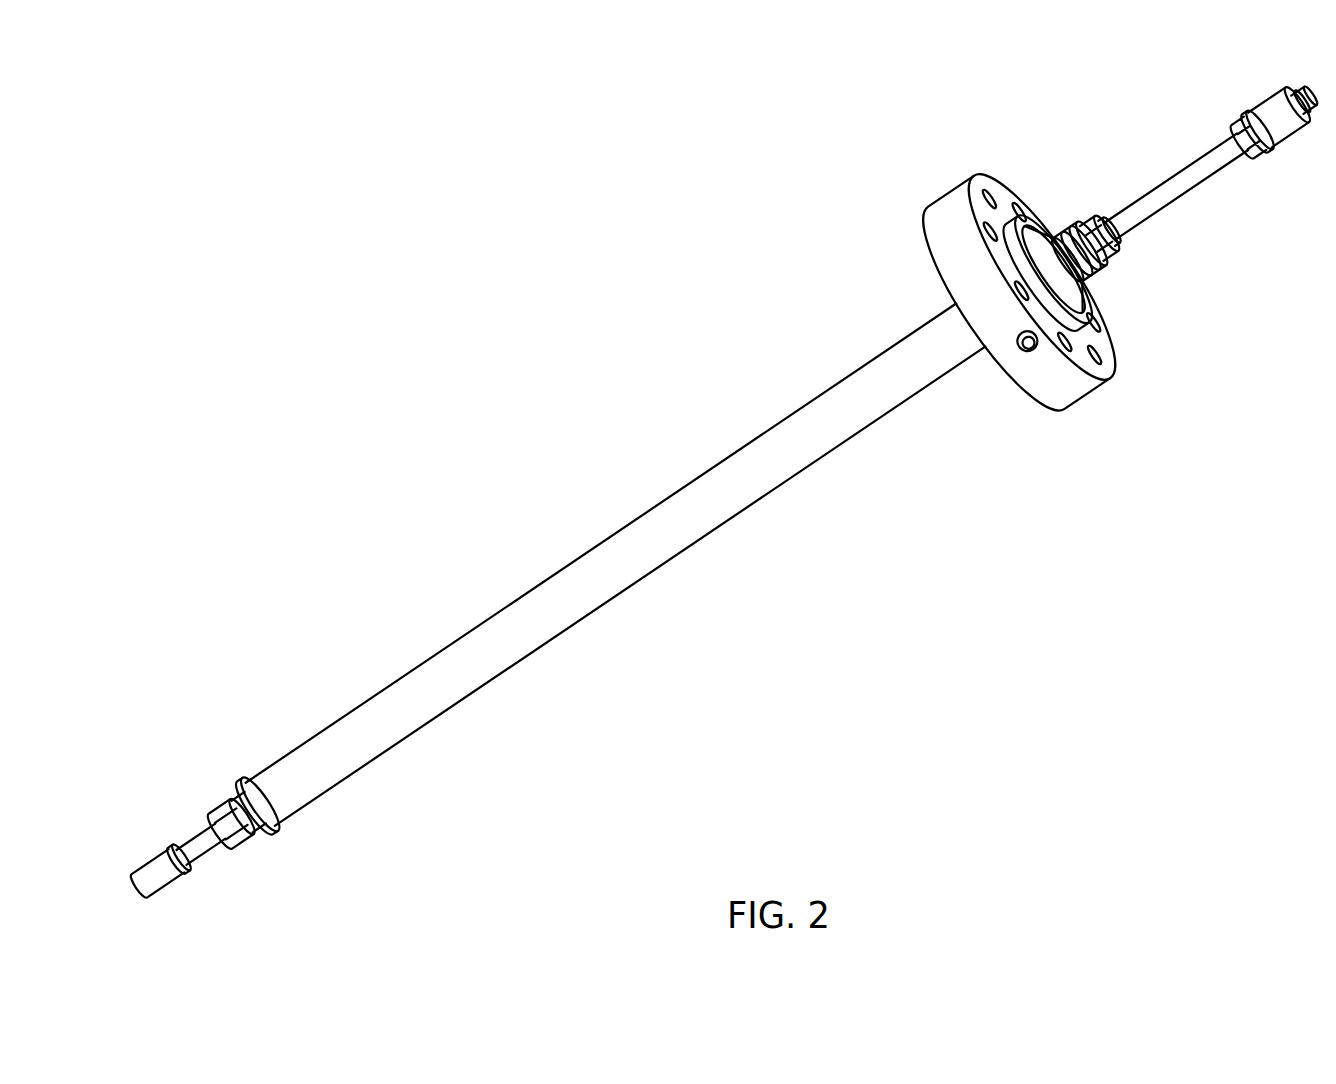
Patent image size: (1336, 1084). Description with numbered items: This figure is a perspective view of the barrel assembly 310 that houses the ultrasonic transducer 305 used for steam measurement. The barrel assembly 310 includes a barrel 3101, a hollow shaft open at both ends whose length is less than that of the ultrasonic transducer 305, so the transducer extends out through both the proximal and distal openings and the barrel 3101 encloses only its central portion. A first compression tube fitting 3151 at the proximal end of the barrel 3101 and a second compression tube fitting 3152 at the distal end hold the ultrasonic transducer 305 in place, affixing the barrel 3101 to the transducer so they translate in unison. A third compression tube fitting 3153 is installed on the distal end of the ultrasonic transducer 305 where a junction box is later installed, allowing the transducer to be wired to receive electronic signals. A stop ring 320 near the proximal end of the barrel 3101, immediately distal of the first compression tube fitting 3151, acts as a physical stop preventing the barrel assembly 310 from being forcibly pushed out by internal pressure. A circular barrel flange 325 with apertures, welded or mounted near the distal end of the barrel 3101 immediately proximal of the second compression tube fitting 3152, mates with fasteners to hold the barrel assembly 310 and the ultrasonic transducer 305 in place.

The barrel assembly 310 is at (708, 502).
The barrel 3101 is at (563, 548).
The barrel flange 325 is at (923, 242).
The stop ring 320 is at (238, 778).
The first compression tube fitting 3151 is at (208, 808).
The second compression tube fitting 3152 is at (1117, 260).
The third compression tube fitting 3153 is at (1272, 85).
The ultrasonic transducer 305 is at (170, 890).